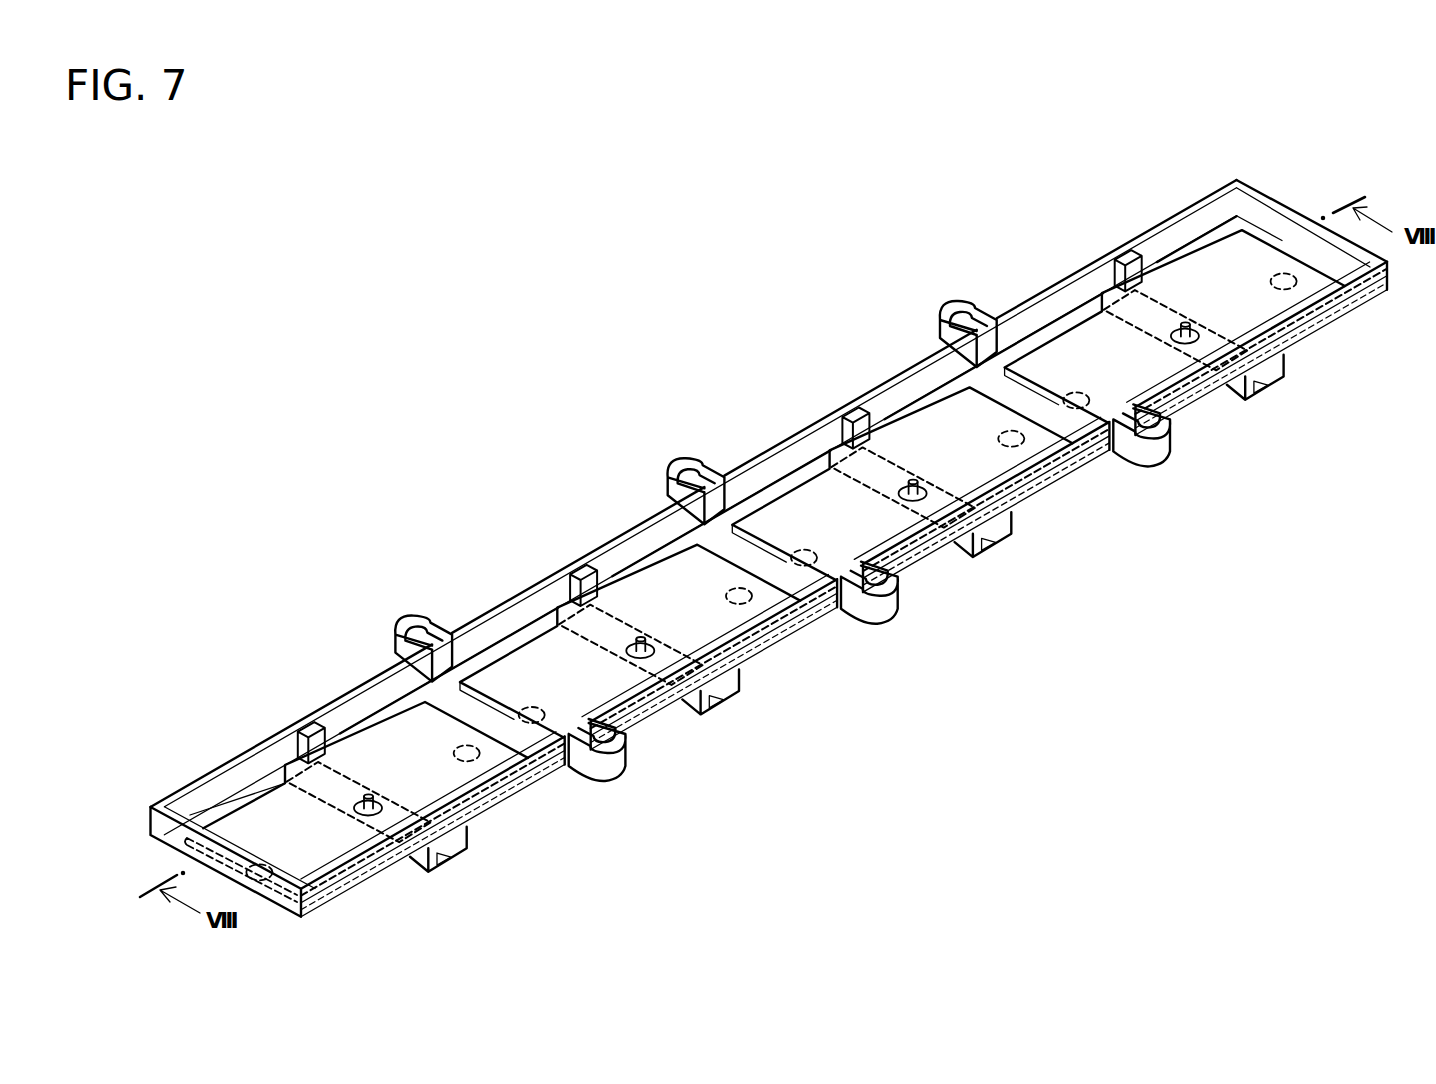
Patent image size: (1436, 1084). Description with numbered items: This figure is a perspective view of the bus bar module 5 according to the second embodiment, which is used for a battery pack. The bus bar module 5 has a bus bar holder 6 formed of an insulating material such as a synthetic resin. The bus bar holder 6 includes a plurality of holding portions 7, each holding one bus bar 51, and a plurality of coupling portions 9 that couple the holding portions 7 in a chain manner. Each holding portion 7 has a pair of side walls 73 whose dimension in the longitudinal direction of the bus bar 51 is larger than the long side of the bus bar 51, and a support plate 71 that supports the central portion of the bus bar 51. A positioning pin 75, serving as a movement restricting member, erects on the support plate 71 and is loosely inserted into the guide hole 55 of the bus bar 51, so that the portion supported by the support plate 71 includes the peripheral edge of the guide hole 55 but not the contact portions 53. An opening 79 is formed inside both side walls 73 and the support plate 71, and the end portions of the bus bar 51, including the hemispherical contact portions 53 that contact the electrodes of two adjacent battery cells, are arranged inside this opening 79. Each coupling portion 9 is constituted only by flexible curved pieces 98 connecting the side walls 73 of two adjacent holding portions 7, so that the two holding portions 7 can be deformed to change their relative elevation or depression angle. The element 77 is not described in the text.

The bus bar module 5 is at (470, 396).
The bus bar holder 6 is at (740, 450).
The holding portion 7 is at (253, 727).
The coupling portion 9 is at (415, 579).
The bus bar 51 is at (405, 699).
The contact portion 53 is at (500, 760).
The guide hole 55 is at (355, 808).
The support plate 71 is at (330, 750).
The side wall 73 is at (215, 800).
The positioning pin 75 is at (372, 795).
The projection 77 is at (305, 740).
The opening 79 is at (196, 797).
The curved piece 98 is at (405, 625).